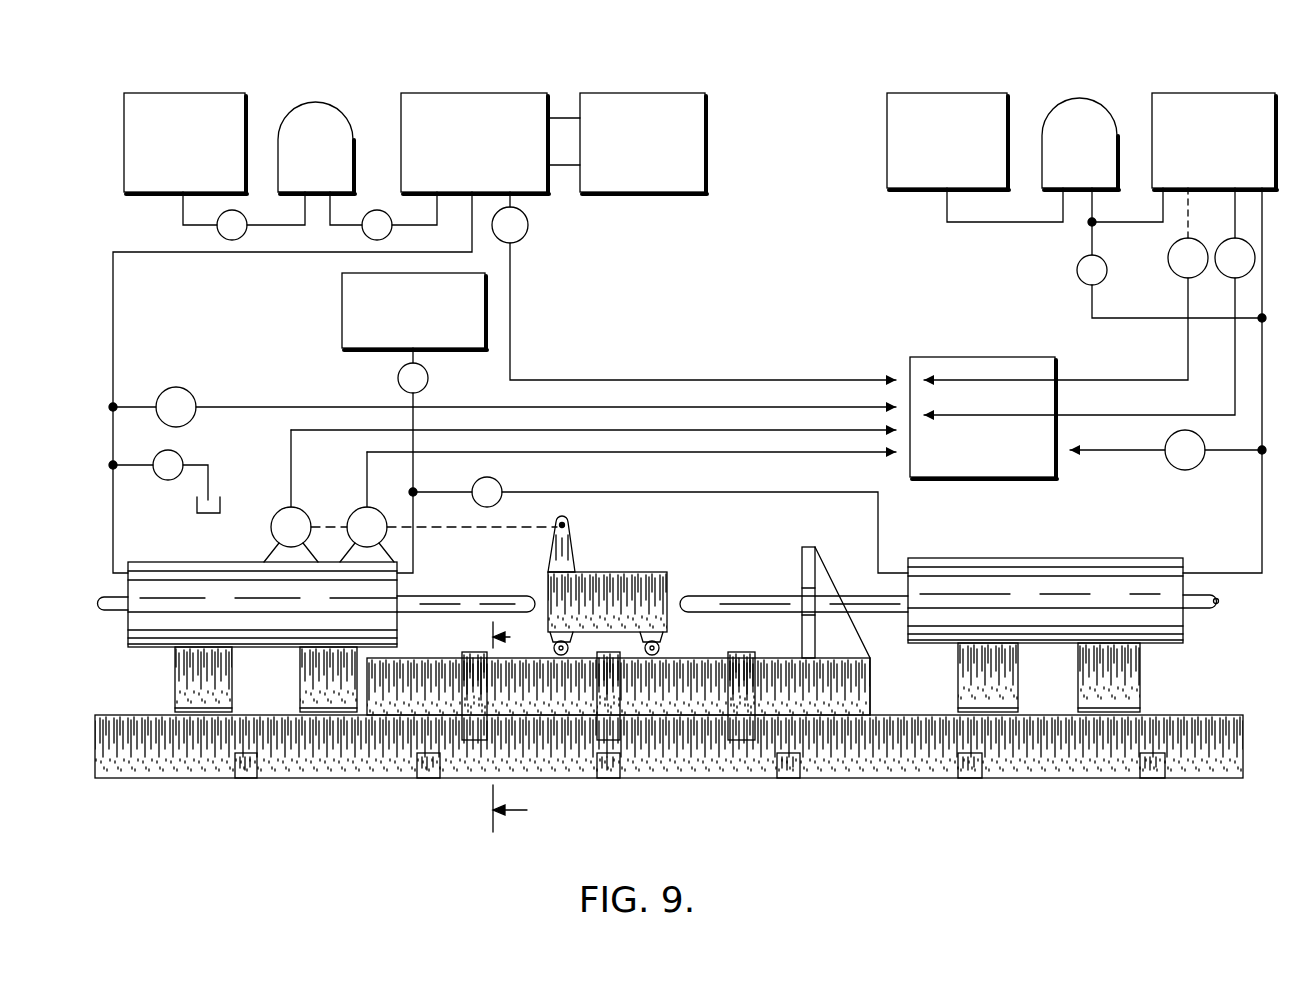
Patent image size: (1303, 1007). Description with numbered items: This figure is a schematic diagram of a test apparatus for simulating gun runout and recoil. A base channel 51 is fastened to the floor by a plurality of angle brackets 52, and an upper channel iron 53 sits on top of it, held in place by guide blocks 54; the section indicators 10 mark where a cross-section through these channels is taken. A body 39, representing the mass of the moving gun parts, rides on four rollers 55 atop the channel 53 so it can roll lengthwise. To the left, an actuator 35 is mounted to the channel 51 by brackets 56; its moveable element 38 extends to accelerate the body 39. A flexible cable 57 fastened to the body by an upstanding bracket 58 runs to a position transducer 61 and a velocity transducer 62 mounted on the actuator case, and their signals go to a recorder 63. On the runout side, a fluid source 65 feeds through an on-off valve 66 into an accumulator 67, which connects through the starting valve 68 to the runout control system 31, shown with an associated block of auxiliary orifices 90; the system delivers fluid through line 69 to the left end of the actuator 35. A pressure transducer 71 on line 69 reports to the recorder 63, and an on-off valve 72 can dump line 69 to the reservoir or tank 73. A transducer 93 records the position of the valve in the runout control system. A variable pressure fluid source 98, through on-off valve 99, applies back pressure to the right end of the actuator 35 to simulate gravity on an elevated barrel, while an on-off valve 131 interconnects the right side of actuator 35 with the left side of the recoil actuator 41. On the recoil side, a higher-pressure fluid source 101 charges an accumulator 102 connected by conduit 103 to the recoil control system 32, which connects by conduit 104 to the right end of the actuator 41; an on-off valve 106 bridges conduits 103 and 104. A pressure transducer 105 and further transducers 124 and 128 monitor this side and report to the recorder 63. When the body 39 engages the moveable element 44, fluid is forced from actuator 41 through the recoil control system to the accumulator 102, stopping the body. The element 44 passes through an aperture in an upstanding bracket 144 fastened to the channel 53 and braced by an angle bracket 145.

The source of fluid under pressure 65 is at (201, 95).
The accumulator 67 is at (315, 102).
The runout control system 31 is at (508, 95).
The auxiliary orifices 90 is at (673, 94).
The on-off valve 66 is at (218, 234).
The on-off valve 68 is at (363, 235).
The line 69 is at (113, 322).
The transducer 93 is at (523, 238).
The fluid source 101 is at (963, 94).
The accumulator 102 is at (1080, 98).
The recoil control system 32 is at (1235, 94).
The conduit 103 is at (1162, 211).
The on-off valve 106 is at (1079, 280).
The transducer 128 is at (1174, 274).
The transducer 124 is at (1230, 280).
The conduit 104 is at (1256, 521).
The pressure transducer 105 is at (1200, 466).
The recorder 63 is at (1012, 357).
The variable pressure fluid source 98 is at (342, 314).
The on-off valve 99 is at (400, 385).
The pressure transducer 71 is at (194, 398).
The on-off valve 72 is at (181, 456).
The reservoir or tank 73 is at (197, 510).
The velocity transducer 62 is at (276, 512).
The position transducer 61 is at (352, 512).
The on-off valve 131 is at (498, 485).
The flexible cable 57 is at (490, 528).
The actuator 35 is at (175, 562).
The moveable element 38 is at (505, 597).
The upstanding bracket 58 is at (576, 540).
The body 39 is at (630, 572).
The rollers 55 is at (662, 650).
The moveable element 44 is at (690, 598).
The upstanding bracket 144 is at (800, 560).
The angle bracket 145 is at (830, 570).
The actuator 41 is at (1128, 558).
The brackets 56 is at (300, 678).
The channel iron 53 is at (870, 690).
The guide blocks 54 is at (755, 690).
The base channel 51 is at (155, 785).
The angle brackets 52 is at (257, 780).
The section line 10 is at (523, 727).